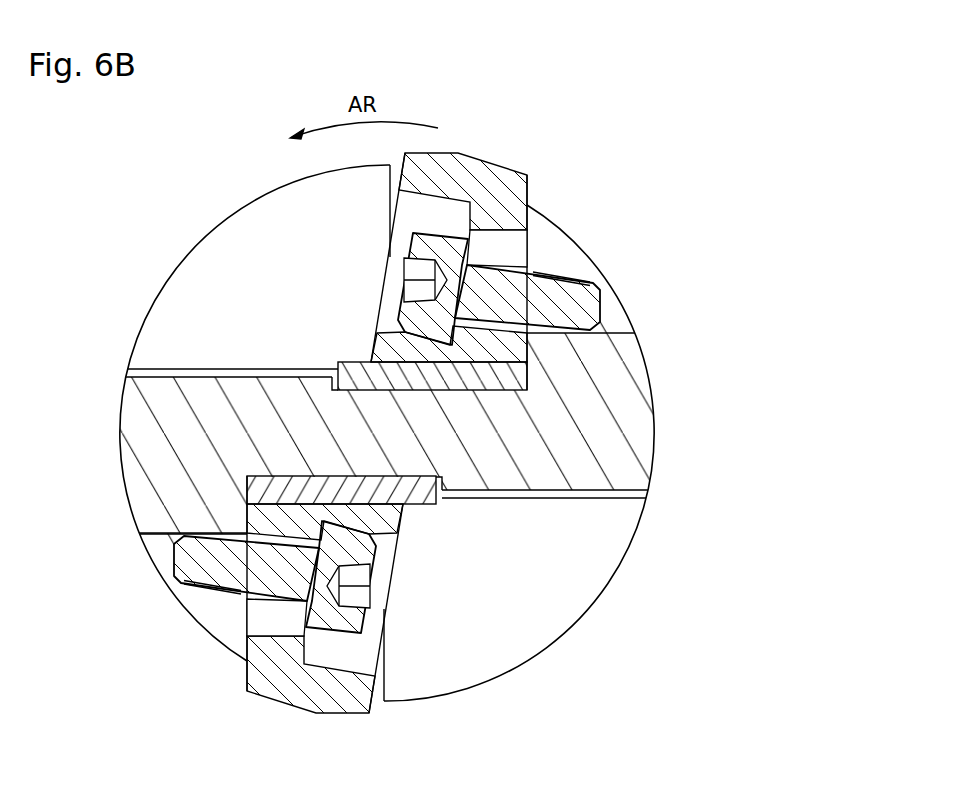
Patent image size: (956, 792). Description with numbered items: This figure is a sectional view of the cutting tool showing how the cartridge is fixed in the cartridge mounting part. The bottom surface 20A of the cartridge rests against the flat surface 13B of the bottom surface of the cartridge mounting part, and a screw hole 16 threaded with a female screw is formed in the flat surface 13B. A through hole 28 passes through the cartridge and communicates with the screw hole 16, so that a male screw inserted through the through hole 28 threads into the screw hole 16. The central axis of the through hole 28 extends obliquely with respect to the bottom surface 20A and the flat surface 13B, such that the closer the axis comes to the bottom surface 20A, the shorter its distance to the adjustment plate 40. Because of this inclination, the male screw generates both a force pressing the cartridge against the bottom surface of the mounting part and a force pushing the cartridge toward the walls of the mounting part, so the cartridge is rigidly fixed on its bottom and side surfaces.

The flat surface 13B is at (530, 231).
The screw hole 16 is at (612, 318).
The bottom surface 20A is at (517, 208).
The through hole 28 is at (492, 230).
The adjustment plate 40 is at (523, 375).